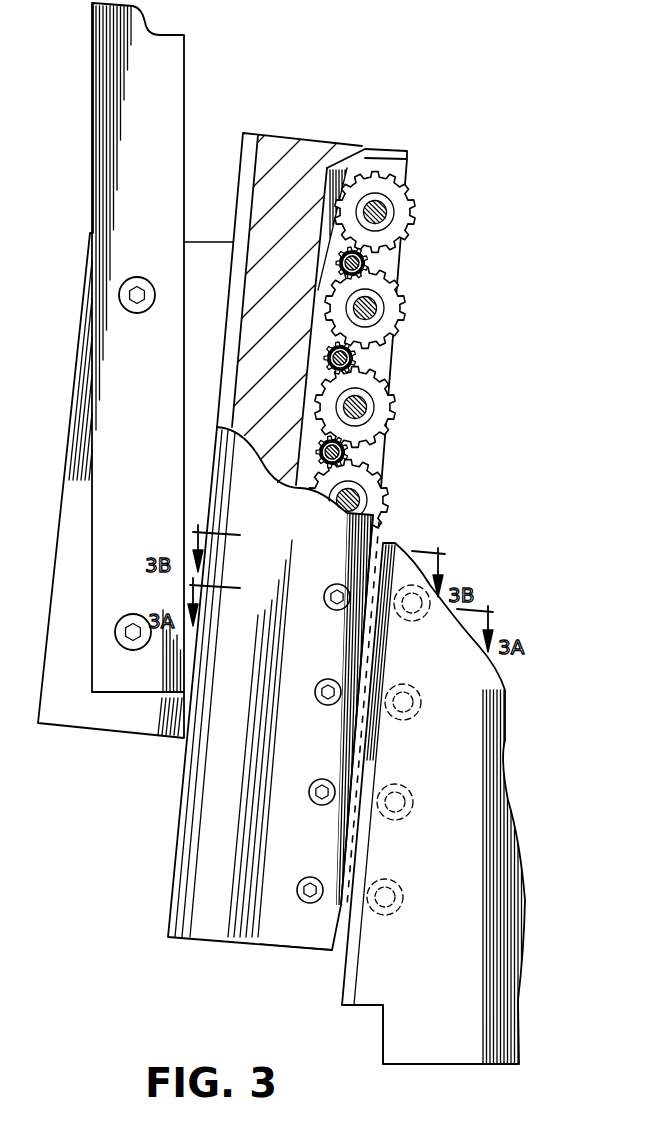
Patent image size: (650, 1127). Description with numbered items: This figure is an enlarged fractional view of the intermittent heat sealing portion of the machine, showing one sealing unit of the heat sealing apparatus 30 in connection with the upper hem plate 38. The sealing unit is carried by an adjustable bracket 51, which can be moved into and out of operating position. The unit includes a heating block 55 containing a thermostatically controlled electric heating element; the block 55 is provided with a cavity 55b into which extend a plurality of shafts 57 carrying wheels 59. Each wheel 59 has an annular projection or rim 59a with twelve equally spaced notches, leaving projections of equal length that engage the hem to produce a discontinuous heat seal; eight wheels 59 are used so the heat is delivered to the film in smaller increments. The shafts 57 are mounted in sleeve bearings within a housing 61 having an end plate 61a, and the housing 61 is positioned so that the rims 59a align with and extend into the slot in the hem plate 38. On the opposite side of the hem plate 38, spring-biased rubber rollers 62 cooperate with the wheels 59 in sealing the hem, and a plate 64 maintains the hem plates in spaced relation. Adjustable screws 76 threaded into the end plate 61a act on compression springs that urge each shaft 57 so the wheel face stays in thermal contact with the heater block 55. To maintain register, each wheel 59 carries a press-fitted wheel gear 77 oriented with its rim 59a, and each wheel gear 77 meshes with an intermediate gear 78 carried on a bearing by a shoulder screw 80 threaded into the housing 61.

The heat sealing apparatus 30 is at (488, 353).
The upper hem plate 38 is at (343, 985).
The adjustable bracket 51 is at (110, 143).
The heating block 55 is at (298, 146).
The cavity 55b is at (365, 155).
The shaft 57 is at (388, 214).
The wheel 59 is at (403, 190).
The annular projection or rim 59a is at (412, 222).
The housing 61 is at (203, 866).
The end plate 61a is at (280, 940).
The rubber roller 62 is at (430, 620).
The plate 64 is at (497, 996).
The adjustable screw 76 is at (330, 612).
The wheel gear 77 is at (378, 256).
The intermediate gear 78 is at (370, 262).
The shoulder screw 80 is at (358, 358).